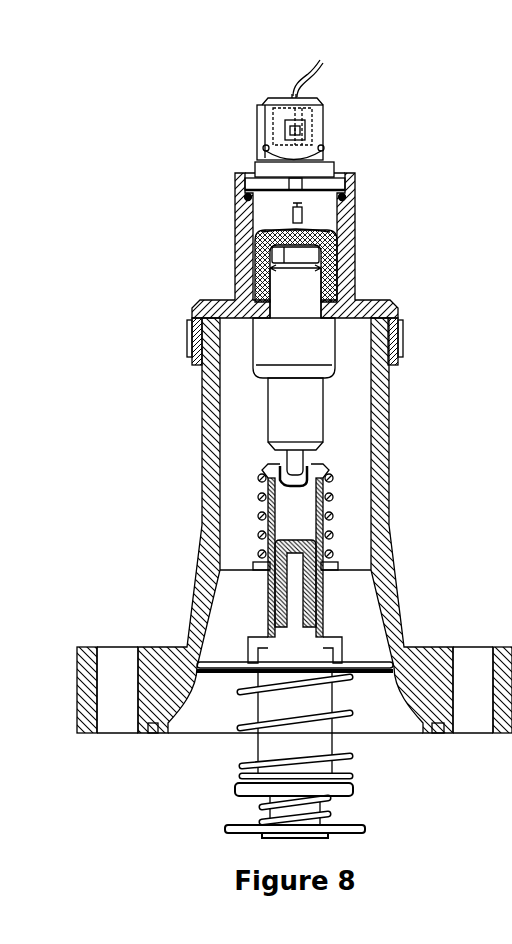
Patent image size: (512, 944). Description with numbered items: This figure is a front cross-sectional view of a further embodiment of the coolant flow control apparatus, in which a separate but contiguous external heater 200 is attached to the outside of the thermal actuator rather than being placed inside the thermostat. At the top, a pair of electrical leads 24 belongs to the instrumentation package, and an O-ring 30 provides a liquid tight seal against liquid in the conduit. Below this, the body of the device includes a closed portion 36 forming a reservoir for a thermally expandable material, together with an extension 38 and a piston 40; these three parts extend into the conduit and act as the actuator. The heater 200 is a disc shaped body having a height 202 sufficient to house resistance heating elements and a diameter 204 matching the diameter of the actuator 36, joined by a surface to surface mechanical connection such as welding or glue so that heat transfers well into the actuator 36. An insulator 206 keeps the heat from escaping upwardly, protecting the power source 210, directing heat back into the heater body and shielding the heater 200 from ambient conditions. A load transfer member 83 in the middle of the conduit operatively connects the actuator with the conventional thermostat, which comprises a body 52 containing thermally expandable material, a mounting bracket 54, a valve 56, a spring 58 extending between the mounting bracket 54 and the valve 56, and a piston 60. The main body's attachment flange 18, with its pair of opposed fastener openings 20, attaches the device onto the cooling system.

The electrical leads 24 is at (319, 79).
The power source 210 is at (302, 210).
The O-ring 30 is at (356, 192).
The insulator 206 is at (318, 230).
The external heater 200 is at (342, 246).
The height 202 is at (281, 250).
The diameter 204 is at (283, 270).
The closed portion 36 is at (307, 288).
The extension 38 is at (315, 412).
The piston 40 is at (307, 458).
The load transfer member 83 is at (324, 507).
The fastener openings 20 is at (108, 653).
The valve 56 is at (222, 668).
The attachment flange 18 is at (441, 647).
The piston 60 is at (303, 609).
The spring 58 is at (240, 690).
The body 52 is at (258, 750).
The mounting bracket 54 is at (355, 788).